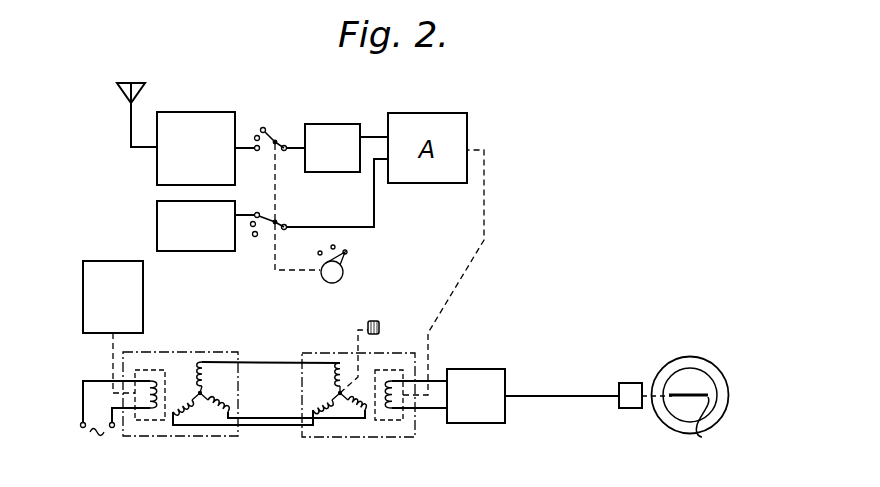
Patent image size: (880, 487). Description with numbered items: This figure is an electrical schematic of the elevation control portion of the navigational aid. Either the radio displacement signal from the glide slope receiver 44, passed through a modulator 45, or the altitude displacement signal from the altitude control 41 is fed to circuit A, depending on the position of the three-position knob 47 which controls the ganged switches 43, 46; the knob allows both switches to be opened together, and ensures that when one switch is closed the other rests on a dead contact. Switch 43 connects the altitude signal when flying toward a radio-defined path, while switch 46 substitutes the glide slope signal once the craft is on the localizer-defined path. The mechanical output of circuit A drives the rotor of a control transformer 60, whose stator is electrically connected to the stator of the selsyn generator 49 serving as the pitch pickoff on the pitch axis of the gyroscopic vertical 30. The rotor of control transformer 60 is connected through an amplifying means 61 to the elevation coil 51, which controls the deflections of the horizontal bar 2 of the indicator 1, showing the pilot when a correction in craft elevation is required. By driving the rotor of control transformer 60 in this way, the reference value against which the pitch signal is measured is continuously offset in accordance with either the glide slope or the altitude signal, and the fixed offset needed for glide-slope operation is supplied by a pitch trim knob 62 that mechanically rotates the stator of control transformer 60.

The indicator 1 is at (727, 372).
The horizontal pointer or bar 2 is at (702, 437).
The gyroscopic vertical 30 is at (83, 300).
The altitude control 41 is at (157, 217).
The switch 43 is at (249, 238).
The glide slope receiver 44 is at (206, 112).
The modulator 45 is at (330, 124).
The switch 46 is at (254, 129).
The three-position knob 47 is at (344, 277).
The selsyn generator 49 is at (188, 352).
The elevation coil 51 is at (630, 383).
The control transformer 60 is at (358, 437).
The amplifying means 61 is at (475, 369).
The pitch trim knob 62 is at (380, 327).